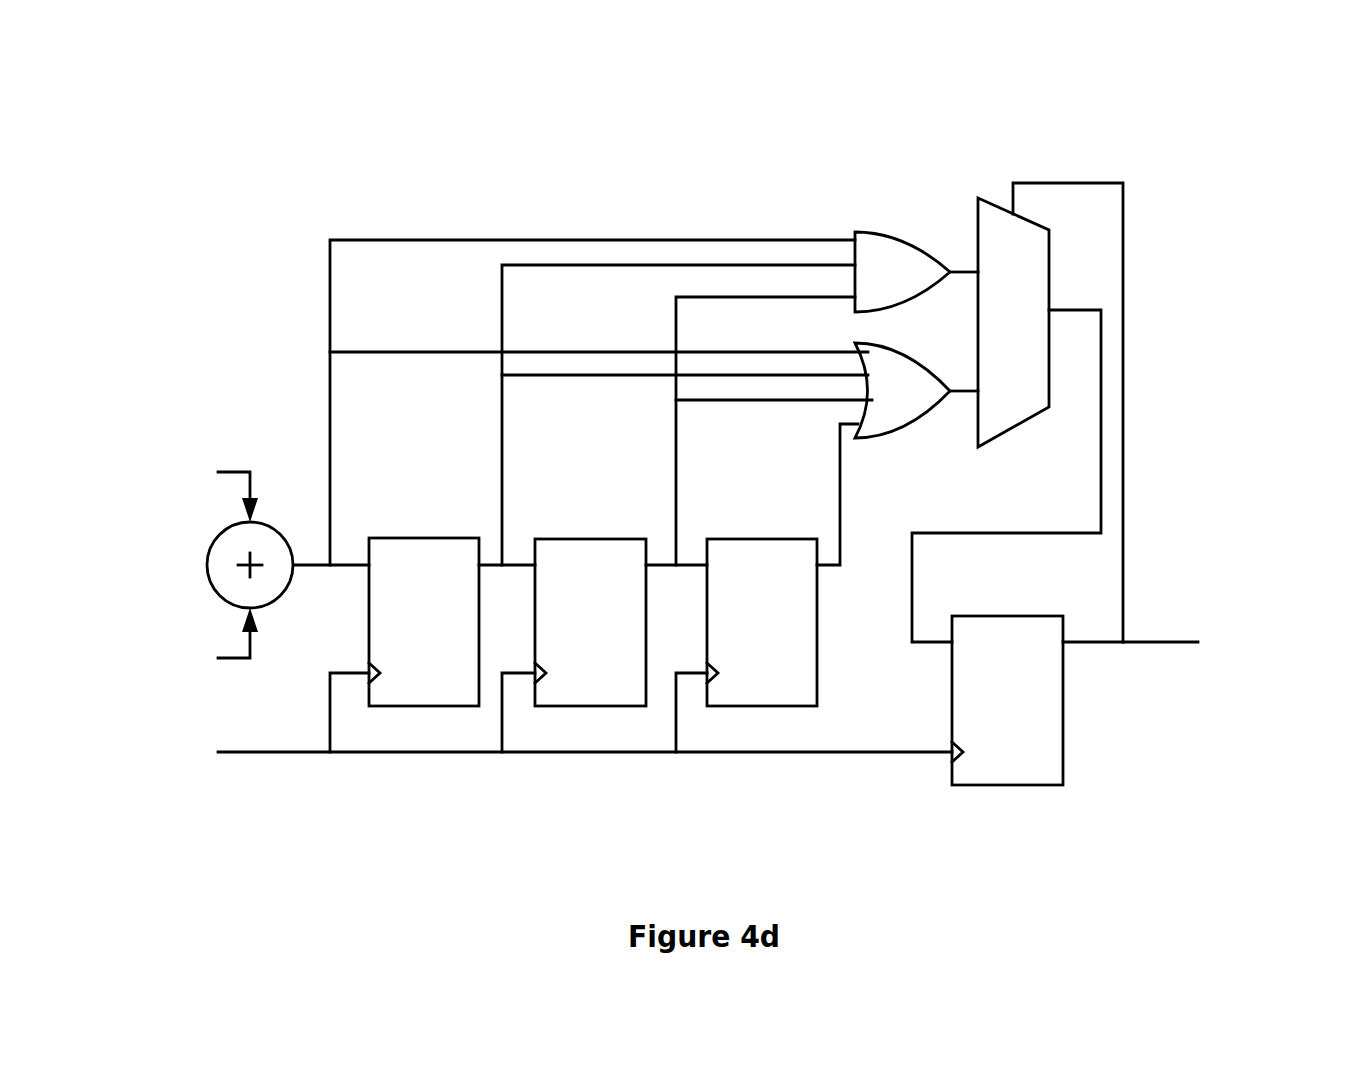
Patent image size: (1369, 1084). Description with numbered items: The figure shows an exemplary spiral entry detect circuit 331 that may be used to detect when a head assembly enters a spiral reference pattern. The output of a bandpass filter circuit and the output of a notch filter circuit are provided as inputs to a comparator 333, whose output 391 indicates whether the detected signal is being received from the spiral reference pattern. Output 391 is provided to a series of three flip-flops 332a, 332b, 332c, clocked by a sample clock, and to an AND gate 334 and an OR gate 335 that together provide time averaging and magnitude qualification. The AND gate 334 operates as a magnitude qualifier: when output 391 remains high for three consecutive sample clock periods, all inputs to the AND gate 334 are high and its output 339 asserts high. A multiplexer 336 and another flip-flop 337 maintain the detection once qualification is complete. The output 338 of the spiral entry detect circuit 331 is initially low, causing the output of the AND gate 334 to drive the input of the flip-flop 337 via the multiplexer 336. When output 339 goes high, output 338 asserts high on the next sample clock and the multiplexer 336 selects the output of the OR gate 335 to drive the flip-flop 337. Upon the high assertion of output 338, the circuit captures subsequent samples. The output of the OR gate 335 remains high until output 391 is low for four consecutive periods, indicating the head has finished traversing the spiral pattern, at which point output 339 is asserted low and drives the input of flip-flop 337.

The spiral entry detect circuit 331 is at (688, 432).
The comparator 333 is at (171, 571).
The output of comparator 391 is at (380, 500).
The flip-flop 332a is at (452, 622).
The flip-flop 332b is at (621, 622).
The flip-flop 332c is at (762, 622).
The AND gate 334 is at (916, 272).
The OR gate 335 is at (916, 390).
The multiplexer 336 is at (1006, 420).
The flip-flop 337 is at (1007, 700).
The output of spiral entry detect 338 is at (1195, 685).
The output of AND gate 339 is at (992, 380).